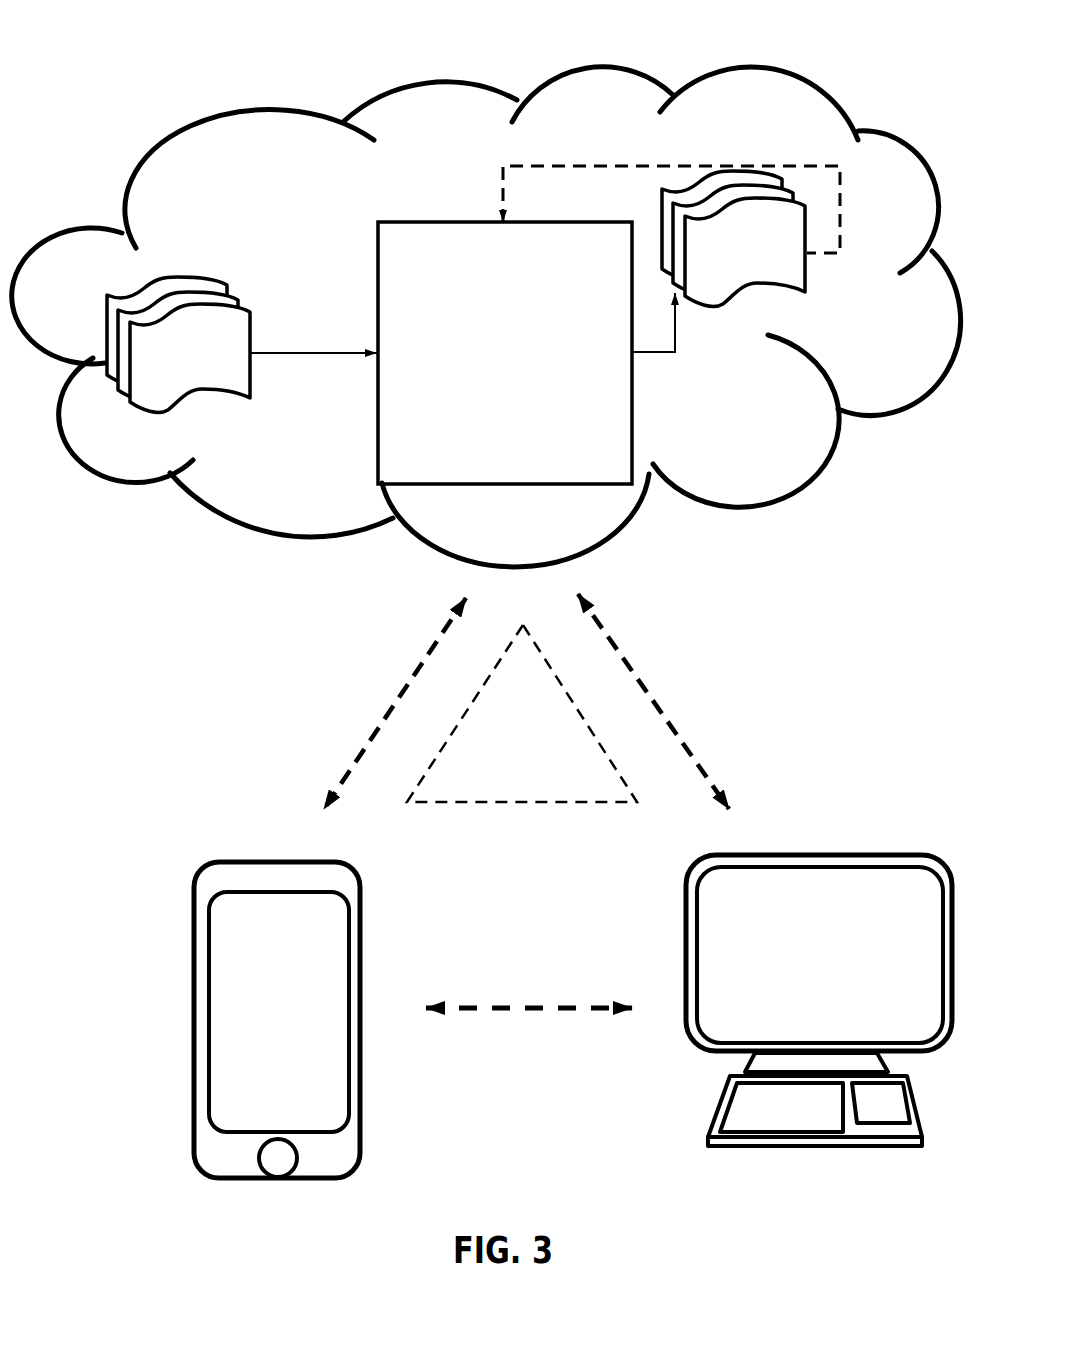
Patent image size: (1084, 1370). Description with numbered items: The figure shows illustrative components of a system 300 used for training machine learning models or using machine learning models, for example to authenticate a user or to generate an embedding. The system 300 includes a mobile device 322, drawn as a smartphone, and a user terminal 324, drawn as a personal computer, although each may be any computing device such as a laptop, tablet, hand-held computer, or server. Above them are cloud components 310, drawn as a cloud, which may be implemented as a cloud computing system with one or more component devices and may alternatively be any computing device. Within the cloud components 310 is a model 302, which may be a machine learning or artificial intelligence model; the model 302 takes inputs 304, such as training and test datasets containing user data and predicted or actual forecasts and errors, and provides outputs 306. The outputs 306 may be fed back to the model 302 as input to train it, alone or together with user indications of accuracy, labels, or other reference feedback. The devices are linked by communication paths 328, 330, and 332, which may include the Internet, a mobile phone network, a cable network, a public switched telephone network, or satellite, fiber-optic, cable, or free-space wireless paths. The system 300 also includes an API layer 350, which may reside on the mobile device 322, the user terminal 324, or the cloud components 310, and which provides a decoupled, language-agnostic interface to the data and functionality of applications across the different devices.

The system 300 is at (483, 60).
The model 302 is at (486, 363).
The inputs 304 is at (197, 281).
The outputs 306 is at (785, 284).
The cloud components 310 is at (802, 126).
The mobile device 322 is at (265, 833).
The user terminal 324 is at (814, 843).
The communication path 328 is at (348, 688).
The communication path 330 is at (734, 658).
The communication path 332 is at (521, 980).
The API layer 350 is at (505, 736).